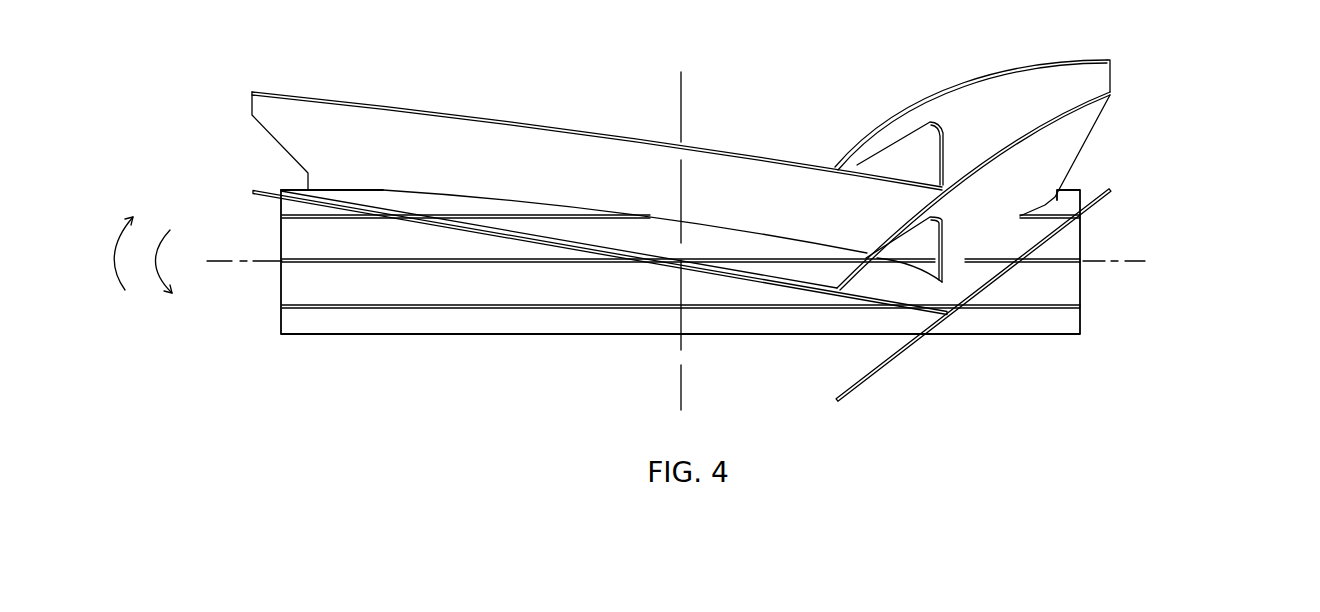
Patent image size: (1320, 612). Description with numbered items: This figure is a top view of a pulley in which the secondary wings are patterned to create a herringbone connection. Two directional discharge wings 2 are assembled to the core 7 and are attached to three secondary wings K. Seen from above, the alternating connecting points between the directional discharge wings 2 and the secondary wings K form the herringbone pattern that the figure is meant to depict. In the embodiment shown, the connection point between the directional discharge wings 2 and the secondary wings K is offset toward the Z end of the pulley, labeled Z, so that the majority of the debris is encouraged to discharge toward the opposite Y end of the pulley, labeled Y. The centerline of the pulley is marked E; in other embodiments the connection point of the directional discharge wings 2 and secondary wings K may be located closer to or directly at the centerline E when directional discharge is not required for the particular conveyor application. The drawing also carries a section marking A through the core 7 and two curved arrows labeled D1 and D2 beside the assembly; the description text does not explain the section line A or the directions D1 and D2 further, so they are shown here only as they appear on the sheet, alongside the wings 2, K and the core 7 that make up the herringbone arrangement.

The directional discharge wing 2 is at (290, 115).
The core 7 is at (1060, 292).
The secondary wing K is at (1080, 188).
The Y end of the pulley Y is at (600, 167).
The Z end of the pulley Z is at (973, 211).
The centerline of the pulley E is at (680, 221).
The section line A- A is at (676, 260).
The first rotation direction D1 is at (175, 248).
The second rotation direction D2 is at (133, 264).